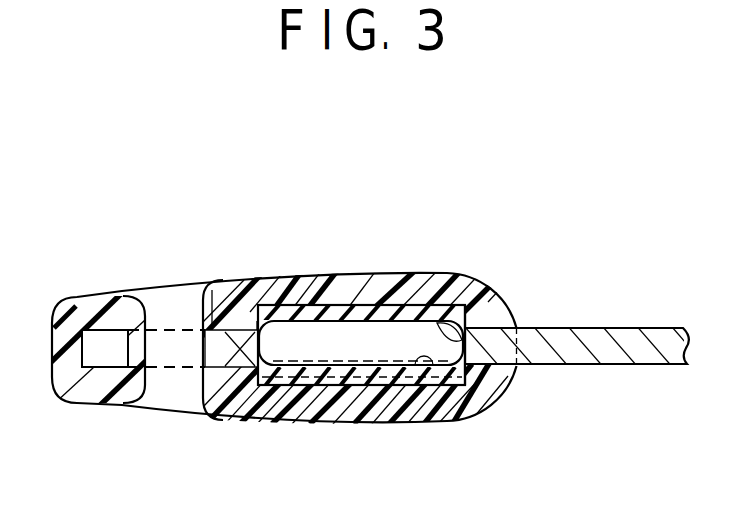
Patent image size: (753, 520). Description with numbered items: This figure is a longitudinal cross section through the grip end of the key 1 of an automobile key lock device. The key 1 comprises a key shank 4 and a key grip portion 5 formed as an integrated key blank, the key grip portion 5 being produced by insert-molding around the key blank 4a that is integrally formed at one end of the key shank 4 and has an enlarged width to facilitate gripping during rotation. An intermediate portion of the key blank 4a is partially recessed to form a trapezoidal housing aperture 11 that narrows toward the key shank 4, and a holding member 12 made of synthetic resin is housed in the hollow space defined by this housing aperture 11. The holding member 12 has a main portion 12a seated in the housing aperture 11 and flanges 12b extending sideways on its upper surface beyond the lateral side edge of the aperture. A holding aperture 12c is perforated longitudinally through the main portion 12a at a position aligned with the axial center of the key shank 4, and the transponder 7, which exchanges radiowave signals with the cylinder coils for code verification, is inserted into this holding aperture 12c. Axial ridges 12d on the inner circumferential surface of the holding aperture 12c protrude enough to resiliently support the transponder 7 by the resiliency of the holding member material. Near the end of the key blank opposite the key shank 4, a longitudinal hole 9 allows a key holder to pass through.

The key 1 is at (577, 229).
The key shank 4 is at (618, 327).
The key blank 4a is at (228, 278).
The key grip portion 5 is at (326, 280).
The transponder 7 is at (362, 320).
The longitudinal hole 9 is at (141, 280).
The housing aperture 11 is at (432, 320).
The holding member 12 is at (240, 403).
The main portion 12a is at (308, 388).
The flanges 12b is at (472, 285).
The holding aperture 12c is at (314, 323).
The axial ridges 12d is at (433, 365).